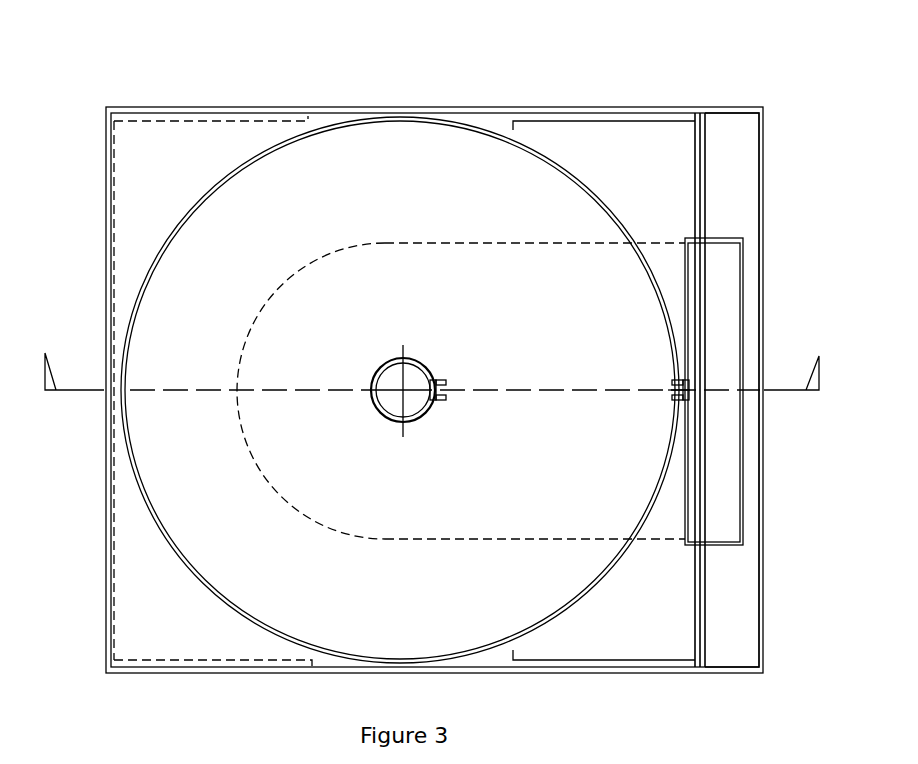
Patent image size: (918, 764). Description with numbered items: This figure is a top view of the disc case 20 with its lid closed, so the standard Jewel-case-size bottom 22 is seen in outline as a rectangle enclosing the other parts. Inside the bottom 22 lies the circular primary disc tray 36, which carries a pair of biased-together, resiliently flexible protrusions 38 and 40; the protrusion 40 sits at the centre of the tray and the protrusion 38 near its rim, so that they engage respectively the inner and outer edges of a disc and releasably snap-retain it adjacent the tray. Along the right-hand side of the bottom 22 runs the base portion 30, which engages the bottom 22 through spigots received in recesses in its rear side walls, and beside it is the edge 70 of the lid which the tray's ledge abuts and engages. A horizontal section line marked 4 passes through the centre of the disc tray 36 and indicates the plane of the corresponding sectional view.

The case 20 is at (378, 78).
The bottom 22 is at (470, 106).
The base portion 30 is at (738, 187).
The primary disc tray 36 is at (725, 305).
The resiliently flexible protrusion 38 is at (672, 389).
The resiliently flexible protrusion 40 is at (447, 388).
The edge of the lid 70 is at (697, 605).
The section line 4- 4 is at (432, 362).